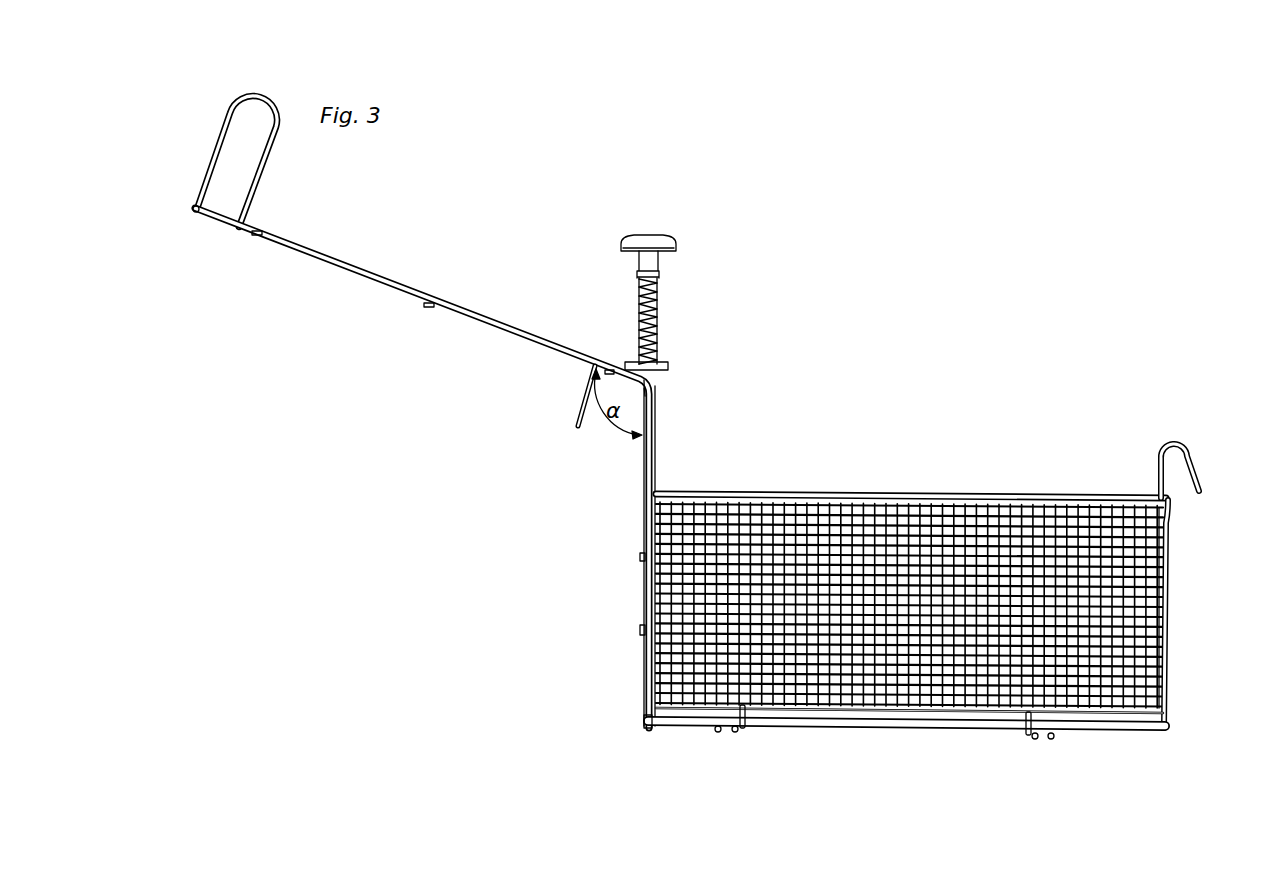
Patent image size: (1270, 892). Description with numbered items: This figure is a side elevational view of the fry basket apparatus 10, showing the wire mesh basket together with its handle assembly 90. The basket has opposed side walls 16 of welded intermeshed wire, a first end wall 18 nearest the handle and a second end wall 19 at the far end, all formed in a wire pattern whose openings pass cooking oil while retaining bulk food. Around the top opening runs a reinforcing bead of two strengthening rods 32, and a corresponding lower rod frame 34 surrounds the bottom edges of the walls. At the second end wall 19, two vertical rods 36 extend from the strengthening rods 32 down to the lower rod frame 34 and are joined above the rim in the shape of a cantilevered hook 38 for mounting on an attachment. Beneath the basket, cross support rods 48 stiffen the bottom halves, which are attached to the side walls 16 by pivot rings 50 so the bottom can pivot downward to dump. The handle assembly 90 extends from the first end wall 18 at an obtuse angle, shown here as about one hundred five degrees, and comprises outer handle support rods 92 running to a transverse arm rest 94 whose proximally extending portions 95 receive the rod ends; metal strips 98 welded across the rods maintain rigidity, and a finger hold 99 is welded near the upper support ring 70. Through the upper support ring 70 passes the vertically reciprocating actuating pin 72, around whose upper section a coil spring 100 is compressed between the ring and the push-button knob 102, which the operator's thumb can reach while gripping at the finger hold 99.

The fry basket apparatus 10 is at (823, 411).
The side walls 16 is at (910, 590).
The first end wall 18 is at (648, 580).
The second end wall 19 is at (1152, 645).
The strengthening rods 32 is at (1068, 488).
The lower rod frame 34 is at (1148, 715).
The vertical rods 36 is at (1160, 607).
The cantilevered hook 38 is at (1184, 487).
The cross support rods 48 is at (714, 725).
The pivot rings 50 is at (740, 718).
The upper support ring 70 is at (656, 355).
The actuating pin 72 is at (648, 368).
The handle assembly 90 is at (441, 247).
The outer handle support rods 92 is at (318, 258).
The arm rest 94 is at (222, 118).
The proximally extending portions 95 is at (186, 203).
The metal strips 98 is at (250, 228).
The finger hold 99 is at (568, 400).
The coil spring 100 is at (630, 315).
The knob 102 is at (614, 232).